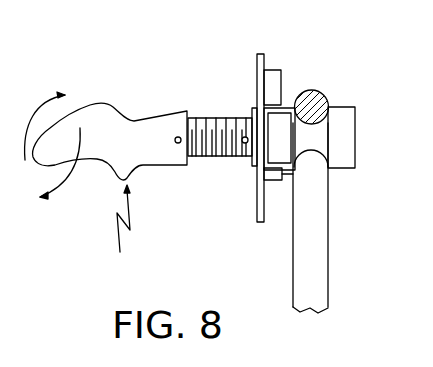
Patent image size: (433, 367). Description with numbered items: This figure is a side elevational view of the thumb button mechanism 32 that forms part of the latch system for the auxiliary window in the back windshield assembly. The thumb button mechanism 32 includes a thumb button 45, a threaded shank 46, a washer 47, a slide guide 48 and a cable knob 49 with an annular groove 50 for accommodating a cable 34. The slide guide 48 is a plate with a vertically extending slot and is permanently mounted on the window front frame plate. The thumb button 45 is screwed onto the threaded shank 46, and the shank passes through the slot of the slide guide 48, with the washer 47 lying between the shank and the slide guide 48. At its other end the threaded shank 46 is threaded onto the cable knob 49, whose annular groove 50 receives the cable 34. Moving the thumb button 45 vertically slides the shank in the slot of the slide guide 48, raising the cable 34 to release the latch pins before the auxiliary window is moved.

The thumb button mechanism 32 is at (123, 234).
The cable 34 is at (328, 267).
The thumb button 45 is at (108, 105).
The threaded shank 46 is at (212, 158).
The washer 47 is at (253, 104).
The slide guide 48 is at (274, 73).
The cable knob 49 is at (350, 150).
The annular groove 50 is at (323, 104).